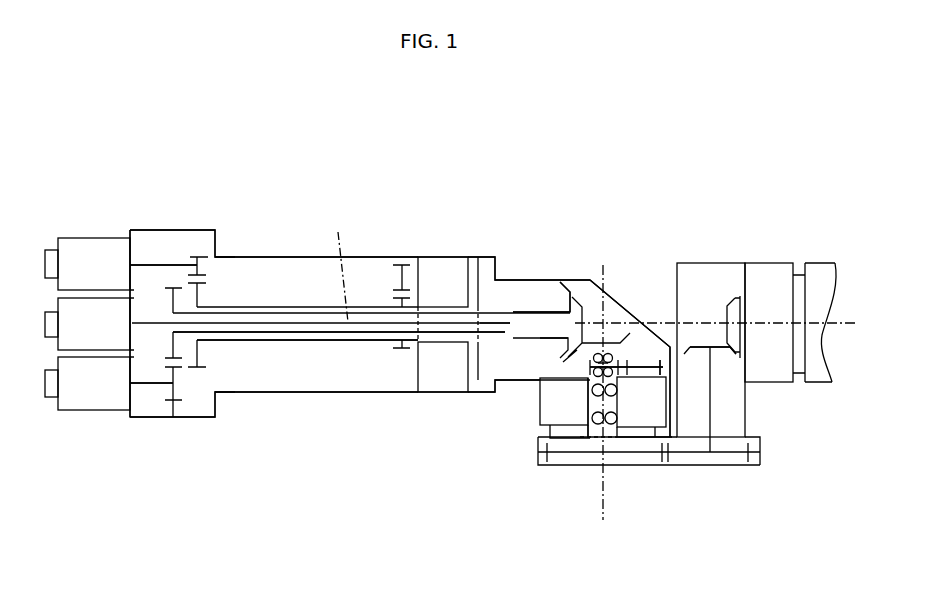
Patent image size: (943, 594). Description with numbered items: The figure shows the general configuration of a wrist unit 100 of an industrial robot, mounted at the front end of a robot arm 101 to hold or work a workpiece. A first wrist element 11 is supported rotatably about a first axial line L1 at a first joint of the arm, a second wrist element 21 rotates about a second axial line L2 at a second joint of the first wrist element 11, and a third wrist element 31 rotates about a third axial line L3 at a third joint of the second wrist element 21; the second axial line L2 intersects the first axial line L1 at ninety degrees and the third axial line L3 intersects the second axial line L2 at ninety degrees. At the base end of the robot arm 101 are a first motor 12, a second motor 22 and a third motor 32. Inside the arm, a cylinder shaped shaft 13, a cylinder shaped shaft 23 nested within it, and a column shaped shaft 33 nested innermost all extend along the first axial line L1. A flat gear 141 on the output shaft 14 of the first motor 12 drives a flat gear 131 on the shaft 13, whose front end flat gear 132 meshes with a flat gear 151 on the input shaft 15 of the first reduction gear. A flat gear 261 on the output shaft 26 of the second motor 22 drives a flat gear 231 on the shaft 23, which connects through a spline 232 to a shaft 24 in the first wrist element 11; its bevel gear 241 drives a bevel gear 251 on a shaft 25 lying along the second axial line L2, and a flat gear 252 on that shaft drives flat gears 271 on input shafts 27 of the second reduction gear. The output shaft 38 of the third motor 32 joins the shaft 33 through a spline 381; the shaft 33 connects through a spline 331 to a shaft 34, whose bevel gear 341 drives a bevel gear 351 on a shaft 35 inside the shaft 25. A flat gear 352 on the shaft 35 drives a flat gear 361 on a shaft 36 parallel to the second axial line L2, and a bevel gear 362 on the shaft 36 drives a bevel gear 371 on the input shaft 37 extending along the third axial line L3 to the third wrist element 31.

The wrist unit 100 is at (622, 182).
The first motor 12 is at (82, 238).
The third motor 32 is at (70, 356).
The second motor 22 is at (88, 412).
The output shaft 38 is at (140, 318).
The spline 381 is at (152, 322).
The output shaft 14 is at (158, 262).
The flat gear 231 is at (168, 283).
The flat gear 141 is at (198, 255).
The flat gear 131 is at (194, 372).
The flat gear 261 is at (168, 403).
The output shaft 26 is at (146, 386).
The robot arm 101 is at (290, 256).
The input shaft 15 is at (419, 259).
The flat gear 151 is at (396, 262).
The flat gear 132 is at (402, 352).
The shaft 13 is at (247, 342).
The shaft 23 is at (283, 334).
The shaft 33 is at (330, 327).
The spline 331 is at (517, 326).
The first axial line L1 is at (340, 262).
The shaft 24 is at (522, 280).
The spline 232 is at (513, 309).
The shaft 34 is at (545, 322).
The bevel gear 241 is at (562, 280).
The bevel gear 341 is at (581, 298).
The first wrist element 11 is at (612, 294).
The third axial line L3 is at (715, 337).
The second axial line L2 is at (604, 404).
The bevel gear 351 is at (625, 356).
The shaft 25 is at (622, 360).
The input shafts 27 is at (625, 384).
The flat gears 271 is at (633, 370).
The bevel gear 251 is at (660, 395).
The shaft 35 is at (640, 430).
The flat gear 252 is at (590, 440).
The flat gear 352 is at (546, 454).
The shaft 36 is at (712, 415).
The flat gear 361 is at (750, 448).
The bevel gear 362 is at (718, 360).
The second wrist element 21 is at (687, 262).
The bevel gear 371 is at (731, 300).
The input shaft 37 is at (740, 297).
The third wrist element 31 is at (820, 262).